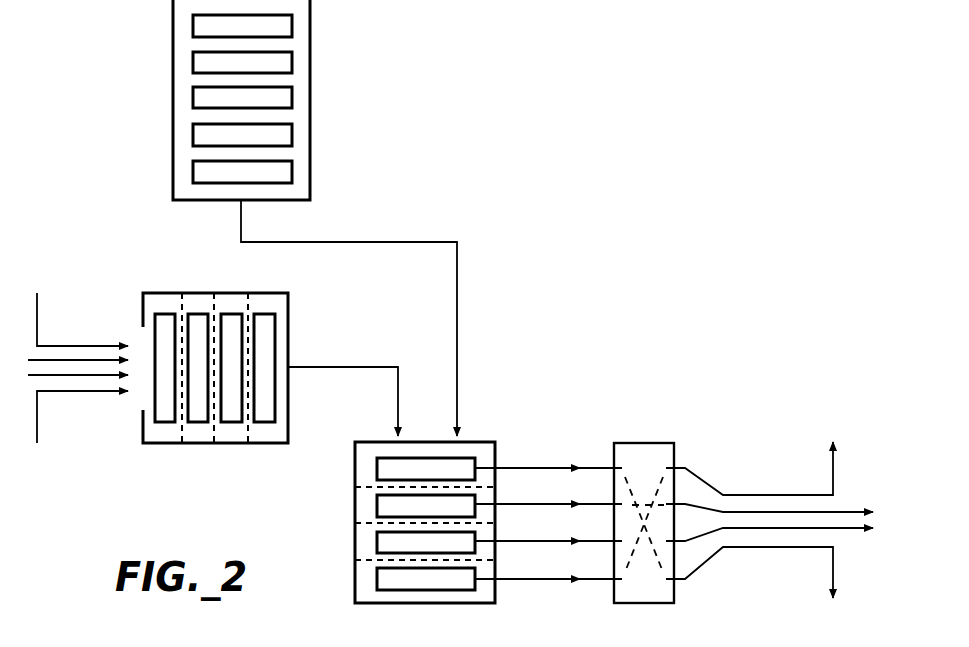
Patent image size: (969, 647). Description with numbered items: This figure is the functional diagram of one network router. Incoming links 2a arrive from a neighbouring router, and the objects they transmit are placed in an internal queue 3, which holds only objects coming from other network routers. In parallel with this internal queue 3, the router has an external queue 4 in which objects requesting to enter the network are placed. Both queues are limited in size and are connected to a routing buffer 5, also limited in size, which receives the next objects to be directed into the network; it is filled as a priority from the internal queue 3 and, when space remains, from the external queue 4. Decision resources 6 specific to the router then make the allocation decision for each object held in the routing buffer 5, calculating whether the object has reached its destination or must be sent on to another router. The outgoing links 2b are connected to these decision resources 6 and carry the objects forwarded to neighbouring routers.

The incoming links 2a is at (57, 373).
The outgoing links 2b is at (753, 528).
The internal queue 3 is at (200, 443).
The external queue 4 is at (310, 113).
The routing buffer 5 is at (483, 442).
The decision resources 6 is at (642, 443).